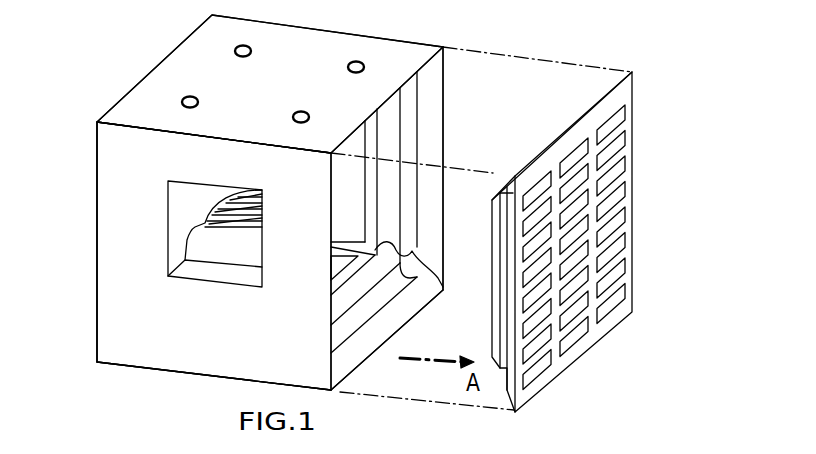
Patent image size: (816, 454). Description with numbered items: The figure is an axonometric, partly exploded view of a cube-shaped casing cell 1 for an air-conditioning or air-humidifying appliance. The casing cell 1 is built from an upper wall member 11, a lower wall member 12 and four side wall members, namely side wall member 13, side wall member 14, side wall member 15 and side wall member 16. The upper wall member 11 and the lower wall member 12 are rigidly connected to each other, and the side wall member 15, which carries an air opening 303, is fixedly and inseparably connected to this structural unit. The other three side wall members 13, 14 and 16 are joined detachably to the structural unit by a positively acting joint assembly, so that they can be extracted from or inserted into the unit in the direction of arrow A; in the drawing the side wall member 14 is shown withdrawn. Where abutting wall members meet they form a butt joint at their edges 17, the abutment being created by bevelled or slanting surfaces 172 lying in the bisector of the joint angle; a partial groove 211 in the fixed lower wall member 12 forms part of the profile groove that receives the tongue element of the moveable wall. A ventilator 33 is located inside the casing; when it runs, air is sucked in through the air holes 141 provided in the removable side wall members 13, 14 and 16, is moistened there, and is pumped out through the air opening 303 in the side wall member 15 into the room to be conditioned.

The casing cell 1 is at (416, 32).
The upper wall member 11 is at (138, 102).
The lower wall member 12 is at (361, 375).
The side wall member 13 is at (454, 105).
The side wall member 14 is at (623, 88).
The side wall member 15 is at (117, 315).
The side wall member 16 is at (86, 241).
The edge 17 is at (554, 126).
The ventilator 33 is at (213, 202).
The air holes 141 is at (615, 217).
The bevelled surface 172 is at (413, 252).
The partial groove 211 is at (368, 305).
The air opening 303 is at (182, 205).